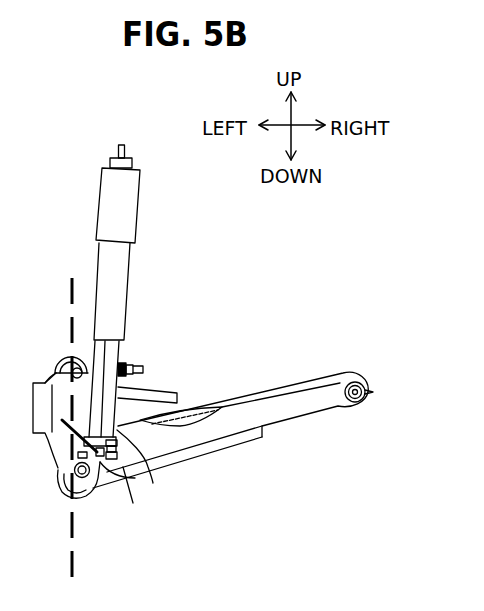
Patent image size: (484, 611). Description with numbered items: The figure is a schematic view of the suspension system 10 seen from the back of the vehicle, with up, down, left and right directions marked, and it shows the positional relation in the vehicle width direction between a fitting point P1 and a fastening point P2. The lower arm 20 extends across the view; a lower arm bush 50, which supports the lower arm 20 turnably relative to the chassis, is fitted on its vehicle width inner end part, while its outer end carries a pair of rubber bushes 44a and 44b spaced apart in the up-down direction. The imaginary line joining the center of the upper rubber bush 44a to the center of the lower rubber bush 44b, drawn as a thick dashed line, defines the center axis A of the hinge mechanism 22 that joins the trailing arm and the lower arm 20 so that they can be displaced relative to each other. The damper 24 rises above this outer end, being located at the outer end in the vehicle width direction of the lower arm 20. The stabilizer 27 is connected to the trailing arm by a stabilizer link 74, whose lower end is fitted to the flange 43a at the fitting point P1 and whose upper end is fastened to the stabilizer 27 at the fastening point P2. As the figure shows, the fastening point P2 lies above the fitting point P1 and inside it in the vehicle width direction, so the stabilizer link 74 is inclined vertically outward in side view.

The suspension system 10 is at (263, 283).
The lower arm 20 is at (278, 380).
The hinge mechanism 22 is at (90, 360).
The damper 24 is at (133, 287).
The stabilizer 27 is at (157, 390).
The flange 43a is at (88, 487).
The upper rubber bush 44a is at (62, 357).
The lower rubber bush 44b is at (62, 490).
The lower arm bush 50 is at (363, 406).
The stabilizer link 74 is at (152, 480).
The fitting point P1 is at (114, 456).
The fastening point P2 is at (121, 364).
The center axis A is at (70, 290).